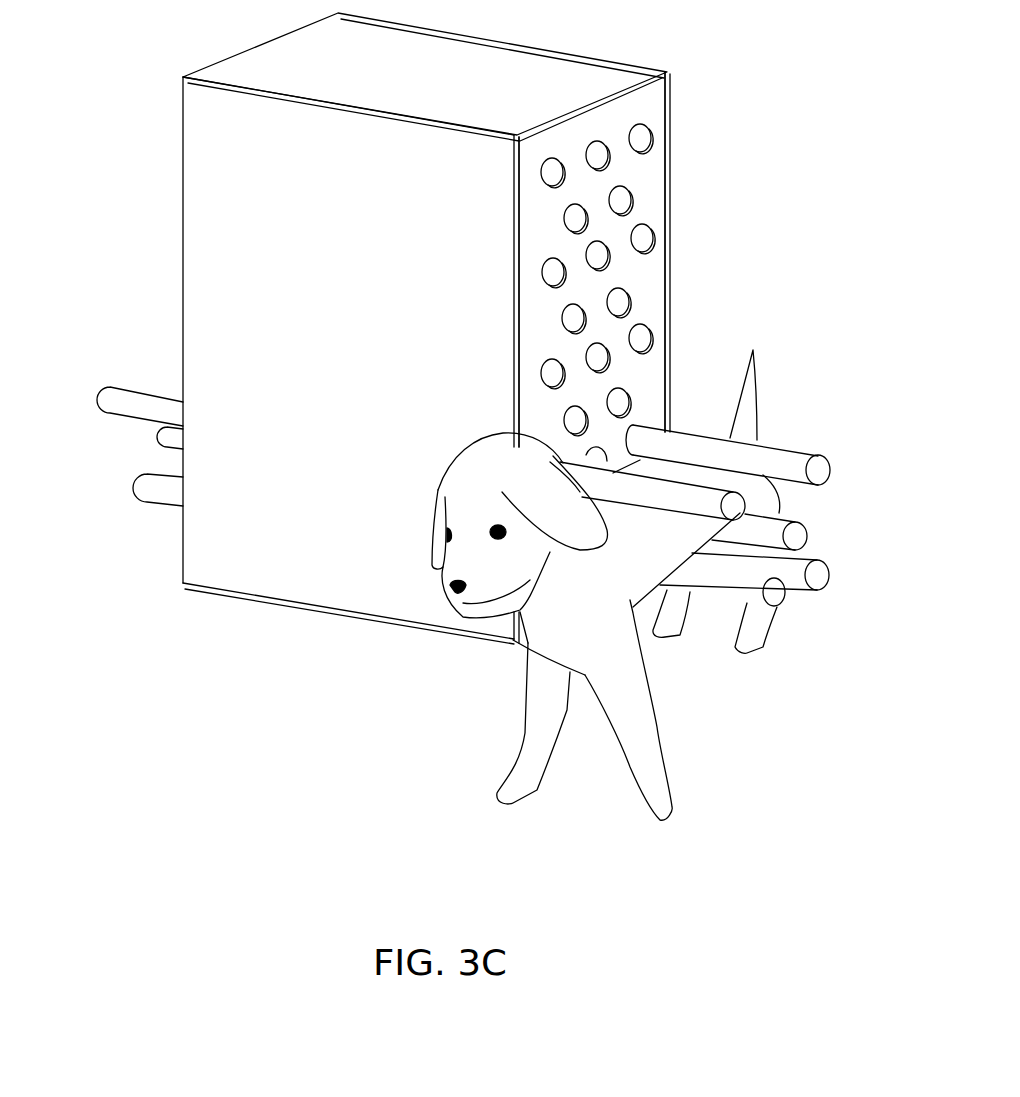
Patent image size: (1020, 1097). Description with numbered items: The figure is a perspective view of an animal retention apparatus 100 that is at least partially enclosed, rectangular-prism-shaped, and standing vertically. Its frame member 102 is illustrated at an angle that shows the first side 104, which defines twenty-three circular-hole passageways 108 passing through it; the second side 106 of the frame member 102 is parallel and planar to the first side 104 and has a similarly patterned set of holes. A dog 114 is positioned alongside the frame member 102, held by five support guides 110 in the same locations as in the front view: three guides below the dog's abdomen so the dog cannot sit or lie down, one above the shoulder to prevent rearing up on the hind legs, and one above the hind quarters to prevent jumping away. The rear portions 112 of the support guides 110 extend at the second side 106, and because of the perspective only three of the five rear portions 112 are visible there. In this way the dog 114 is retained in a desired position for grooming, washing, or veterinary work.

The animal retention apparatus 100 is at (731, 183).
The frame member 102 is at (253, 194).
The first side 104 is at (655, 315).
The second side 106 is at (171, 556).
The passageways 108 is at (622, 400).
The support guides 110 is at (755, 588).
The rear portions 112 is at (142, 398).
The dog 114 is at (570, 632).